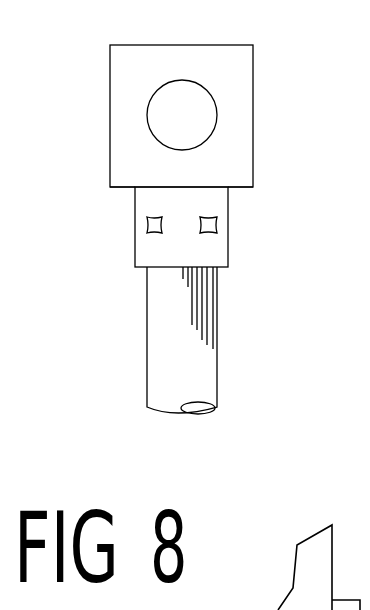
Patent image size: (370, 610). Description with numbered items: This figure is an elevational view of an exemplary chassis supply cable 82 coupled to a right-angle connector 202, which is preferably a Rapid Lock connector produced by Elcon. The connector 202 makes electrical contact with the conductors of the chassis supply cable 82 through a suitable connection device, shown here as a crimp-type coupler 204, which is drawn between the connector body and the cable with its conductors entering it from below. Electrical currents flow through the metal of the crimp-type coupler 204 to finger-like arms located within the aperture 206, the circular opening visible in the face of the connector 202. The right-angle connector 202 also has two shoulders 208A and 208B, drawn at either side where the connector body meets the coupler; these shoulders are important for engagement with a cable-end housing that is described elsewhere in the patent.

The right-angle connector 202 is at (253, 160).
The aperture 206 is at (203, 110).
The crimp-type coupler 204 is at (228, 243).
The shoulder 208A is at (120, 187).
The shoulder 208B is at (246, 187).
The chassis supply cable 82 is at (205, 330).